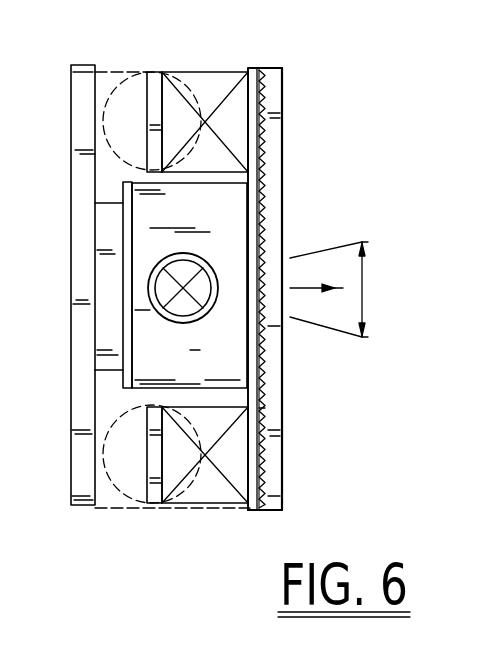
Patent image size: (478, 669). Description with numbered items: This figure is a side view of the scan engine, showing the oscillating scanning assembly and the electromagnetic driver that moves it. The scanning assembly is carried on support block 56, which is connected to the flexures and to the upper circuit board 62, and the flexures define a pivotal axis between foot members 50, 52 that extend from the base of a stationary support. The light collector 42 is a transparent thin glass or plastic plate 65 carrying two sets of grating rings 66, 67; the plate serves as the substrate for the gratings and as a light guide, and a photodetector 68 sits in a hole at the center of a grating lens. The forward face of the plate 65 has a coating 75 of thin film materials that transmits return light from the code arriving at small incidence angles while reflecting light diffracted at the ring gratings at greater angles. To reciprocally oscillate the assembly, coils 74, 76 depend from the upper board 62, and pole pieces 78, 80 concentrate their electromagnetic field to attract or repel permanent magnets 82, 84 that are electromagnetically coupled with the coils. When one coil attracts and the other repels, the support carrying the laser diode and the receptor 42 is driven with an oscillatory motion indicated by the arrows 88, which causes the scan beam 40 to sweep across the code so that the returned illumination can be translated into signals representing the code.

The scan beam 40 is at (312, 288).
The light collector 42 is at (283, 500).
The foot member 50 is at (110, 277).
The foot member 52 is at (73, 222).
The support block 56 is at (236, 350).
The upper circuit board 62 is at (252, 68).
The collector plate 65 is at (275, 213).
The grating rings 66 is at (265, 160).
The grating rings 67 is at (262, 418).
The photodetector 68 is at (265, 510).
The coil 74 is at (235, 445).
The coating 75 is at (283, 470).
The coil 76 is at (243, 112).
The pole piece 78 is at (150, 505).
The pole piece 80 is at (150, 72).
The permanent magnet 82 is at (123, 67).
The permanent magnet 84 is at (115, 478).
The arrows 88 is at (362, 296).